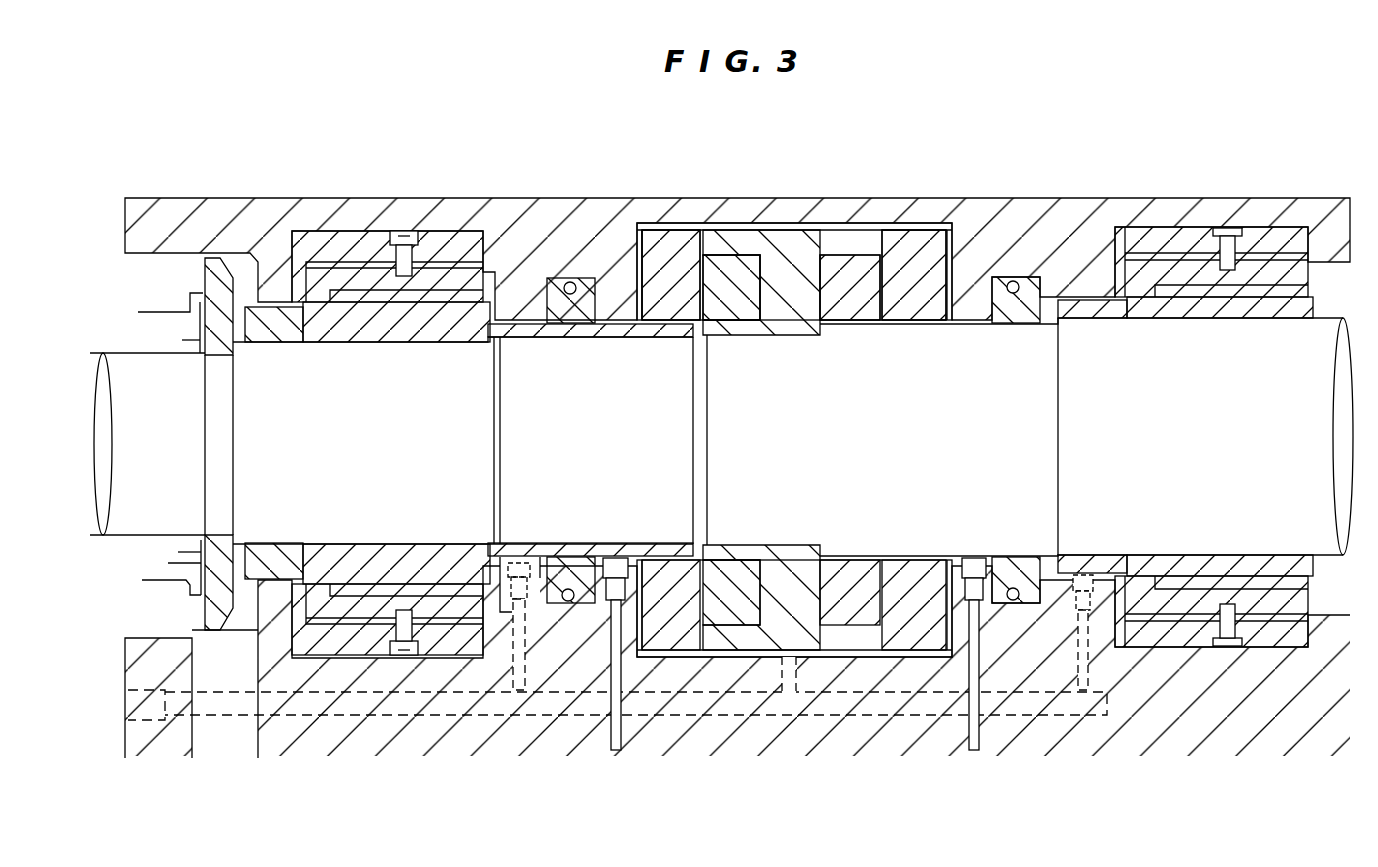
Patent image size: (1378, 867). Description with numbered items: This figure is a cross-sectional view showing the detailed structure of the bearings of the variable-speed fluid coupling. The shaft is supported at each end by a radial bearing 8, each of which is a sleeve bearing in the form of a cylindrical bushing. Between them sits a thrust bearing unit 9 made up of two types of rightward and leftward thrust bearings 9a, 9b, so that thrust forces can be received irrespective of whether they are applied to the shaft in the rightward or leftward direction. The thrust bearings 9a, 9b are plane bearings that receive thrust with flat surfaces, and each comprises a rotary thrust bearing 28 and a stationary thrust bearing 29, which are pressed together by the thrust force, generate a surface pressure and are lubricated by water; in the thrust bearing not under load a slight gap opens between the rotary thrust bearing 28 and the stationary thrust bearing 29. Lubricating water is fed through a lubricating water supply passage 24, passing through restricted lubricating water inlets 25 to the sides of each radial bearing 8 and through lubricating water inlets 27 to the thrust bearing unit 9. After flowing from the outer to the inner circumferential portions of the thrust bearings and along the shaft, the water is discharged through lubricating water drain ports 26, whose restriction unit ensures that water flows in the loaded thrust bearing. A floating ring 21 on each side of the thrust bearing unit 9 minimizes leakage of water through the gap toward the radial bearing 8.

The radial bearing 8 is at (340, 300).
The thrust bearing unit 9 is at (788, 238).
The thrust bearing 9a is at (912, 166).
The thrust bearing 9b is at (637, 166).
The rotary thrust bearing 28 is at (720, 268).
The stationary thrust bearing 29 is at (668, 262).
The floating ring 21 is at (548, 605).
The lubricating water supply passage 24 is at (342, 718).
The lubricating water inlet 25 is at (512, 620).
The lubricating water drain port 26 is at (620, 600).
The lubricating water inlet 27 is at (790, 693).